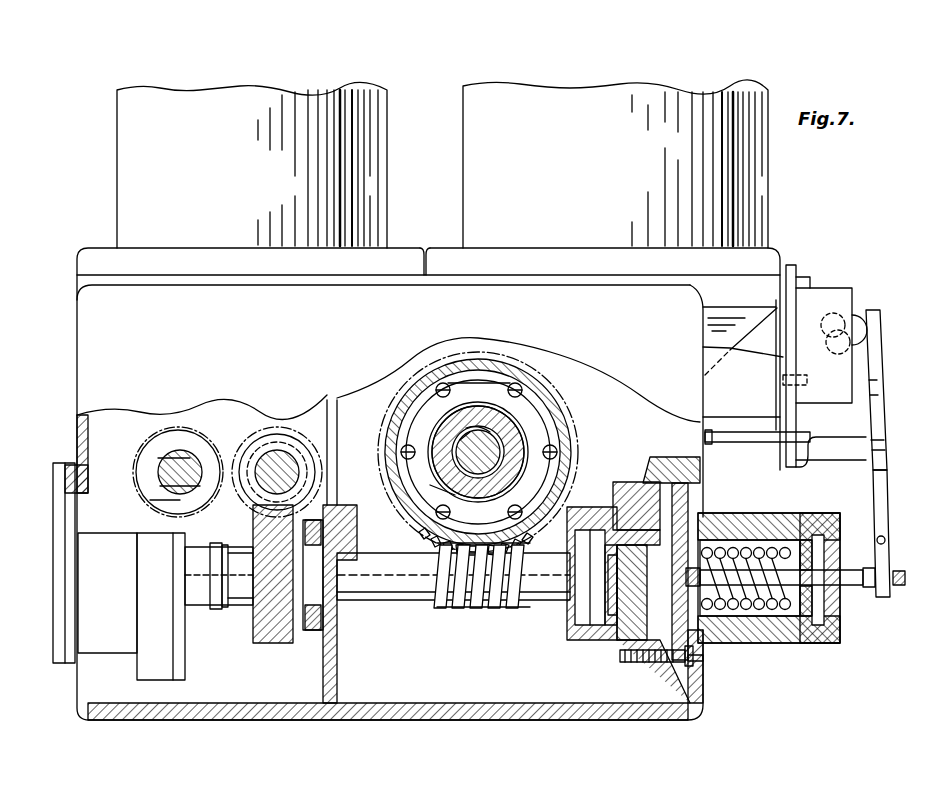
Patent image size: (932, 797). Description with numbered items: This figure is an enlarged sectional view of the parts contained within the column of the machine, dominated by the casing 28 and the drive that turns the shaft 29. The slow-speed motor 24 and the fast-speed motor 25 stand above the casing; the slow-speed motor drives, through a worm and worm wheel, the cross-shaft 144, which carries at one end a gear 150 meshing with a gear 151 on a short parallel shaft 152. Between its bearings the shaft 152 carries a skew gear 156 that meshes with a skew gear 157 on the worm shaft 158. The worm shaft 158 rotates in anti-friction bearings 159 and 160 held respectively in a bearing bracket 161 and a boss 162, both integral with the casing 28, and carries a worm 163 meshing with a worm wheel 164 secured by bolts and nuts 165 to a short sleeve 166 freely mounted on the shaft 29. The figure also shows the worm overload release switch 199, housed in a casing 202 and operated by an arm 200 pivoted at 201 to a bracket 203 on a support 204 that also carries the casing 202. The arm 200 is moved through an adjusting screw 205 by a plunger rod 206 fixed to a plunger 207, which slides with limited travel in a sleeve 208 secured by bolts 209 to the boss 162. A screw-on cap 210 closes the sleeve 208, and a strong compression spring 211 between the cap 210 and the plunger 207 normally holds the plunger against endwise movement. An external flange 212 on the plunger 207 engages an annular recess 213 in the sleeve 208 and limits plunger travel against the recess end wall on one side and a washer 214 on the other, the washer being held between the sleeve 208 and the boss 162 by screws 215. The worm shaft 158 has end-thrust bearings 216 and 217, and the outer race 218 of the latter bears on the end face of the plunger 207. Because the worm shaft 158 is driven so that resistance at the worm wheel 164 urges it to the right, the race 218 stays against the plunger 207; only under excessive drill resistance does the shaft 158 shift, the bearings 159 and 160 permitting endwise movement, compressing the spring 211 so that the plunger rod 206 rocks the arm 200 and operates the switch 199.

The slow-speed motor 24 is at (384, 137).
The fast-speed motor 25 is at (470, 170).
The casing 28 is at (393, 703).
The shaft 29 is at (470, 453).
The cross-shaft 144 is at (178, 462).
The gear 150 is at (198, 440).
The gear 151 is at (268, 450).
The short parallel shaft 152 is at (262, 455).
The skew gear 156 is at (290, 445).
The skew gear 157 is at (239, 590).
The worm shaft 158 is at (400, 598).
The anti-friction bearing 159 is at (312, 635).
The anti-friction bearing 160 is at (582, 612).
The bearing bracket 161 is at (338, 664).
The boss 162 is at (600, 648).
The worm 163 is at (470, 600).
The worm wheel 164 is at (570, 430).
The bolts and nuts 165 is at (444, 383).
The short sleeve 166 is at (520, 420).
The worm overload release switch 199 is at (850, 302).
The arm 200 is at (880, 372).
The pivot 201 is at (886, 535).
The casing 202 is at (812, 307).
The bracket 203 is at (860, 460).
The support 204 is at (740, 432).
The adjusting screw 205 is at (895, 590).
The plunger rod 206 is at (846, 586).
The plunger 207 is at (770, 622).
The sleeve 208 is at (740, 522).
The bolts 209 is at (703, 662).
The screw-on cap 210 is at (812, 628).
The compression spring 211 is at (818, 643).
The external flange 212 is at (700, 637).
The annular recess 213 is at (686, 520).
The washer 214 is at (648, 665).
The screws 215 is at (672, 478).
The end-thrust bearing 216 is at (218, 607).
The end-thrust bearing 217 is at (612, 605).
The outer race 218 is at (625, 520).